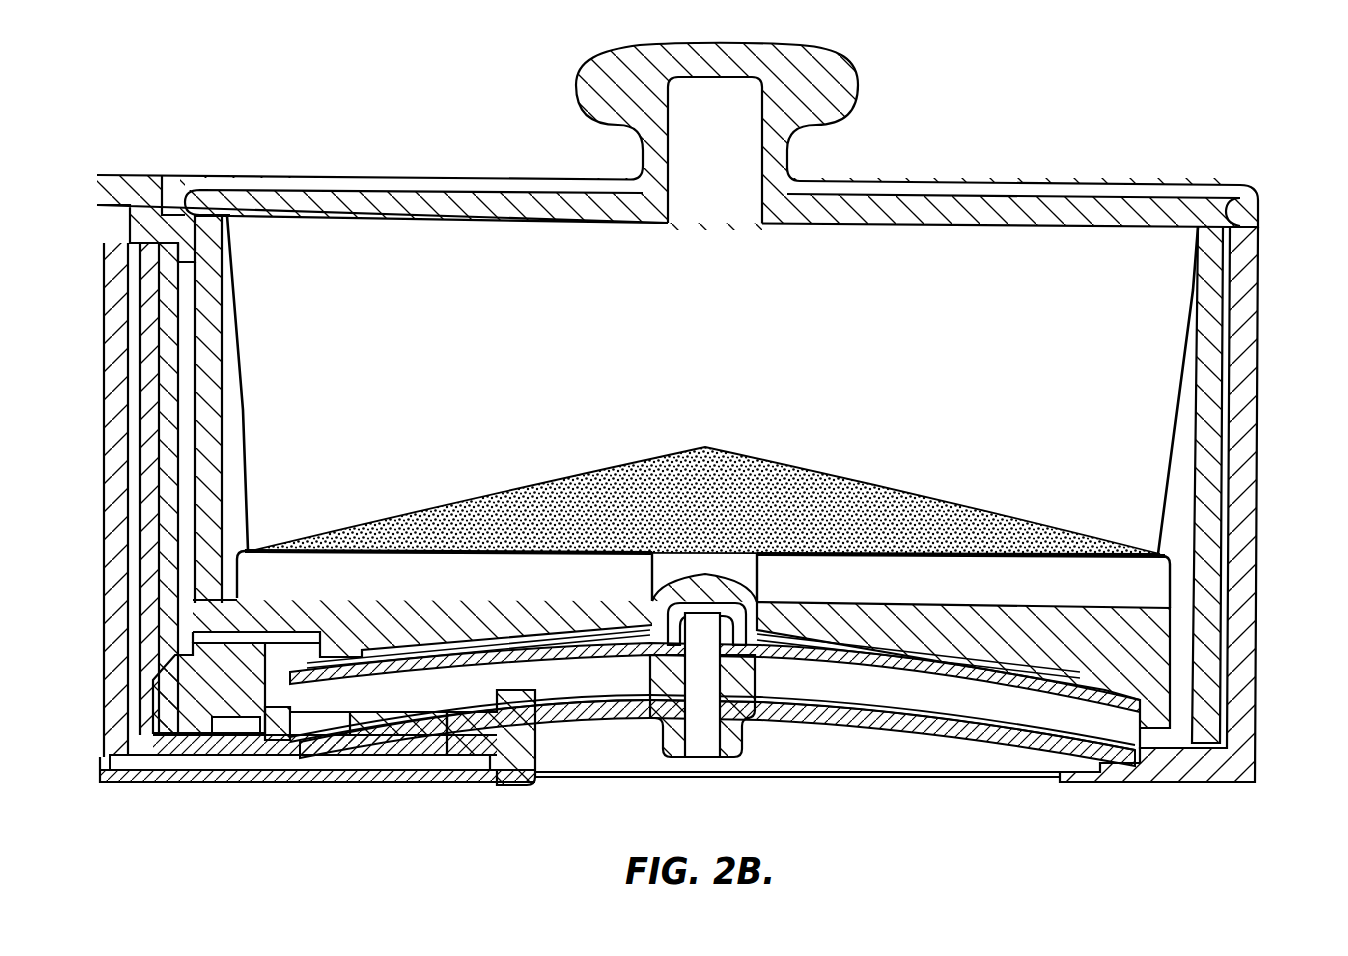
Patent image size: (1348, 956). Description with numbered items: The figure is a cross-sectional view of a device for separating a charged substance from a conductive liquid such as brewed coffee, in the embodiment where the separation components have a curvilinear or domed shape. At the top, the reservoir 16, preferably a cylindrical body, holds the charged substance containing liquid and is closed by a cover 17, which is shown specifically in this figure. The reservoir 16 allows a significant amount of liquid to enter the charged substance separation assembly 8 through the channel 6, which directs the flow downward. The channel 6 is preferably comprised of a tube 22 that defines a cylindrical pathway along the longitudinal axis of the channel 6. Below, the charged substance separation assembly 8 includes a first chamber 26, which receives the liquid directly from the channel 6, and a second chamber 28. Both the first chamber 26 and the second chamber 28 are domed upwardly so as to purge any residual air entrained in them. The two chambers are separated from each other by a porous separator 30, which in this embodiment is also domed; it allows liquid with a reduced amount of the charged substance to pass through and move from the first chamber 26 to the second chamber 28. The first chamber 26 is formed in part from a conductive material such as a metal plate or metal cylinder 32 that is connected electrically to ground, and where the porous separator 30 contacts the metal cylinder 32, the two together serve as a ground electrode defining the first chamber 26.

The charged substance separation assembly 8 is at (1262, 646).
The cover 17 is at (850, 90).
The reservoir 16 is at (903, 331).
The channel 6 is at (648, 575).
The tube 22 is at (757, 568).
The first chamber 26 is at (580, 678).
The second chamber 28 is at (936, 655).
The porous separator 30 is at (1000, 690).
The metal cylinder 32 is at (833, 700).